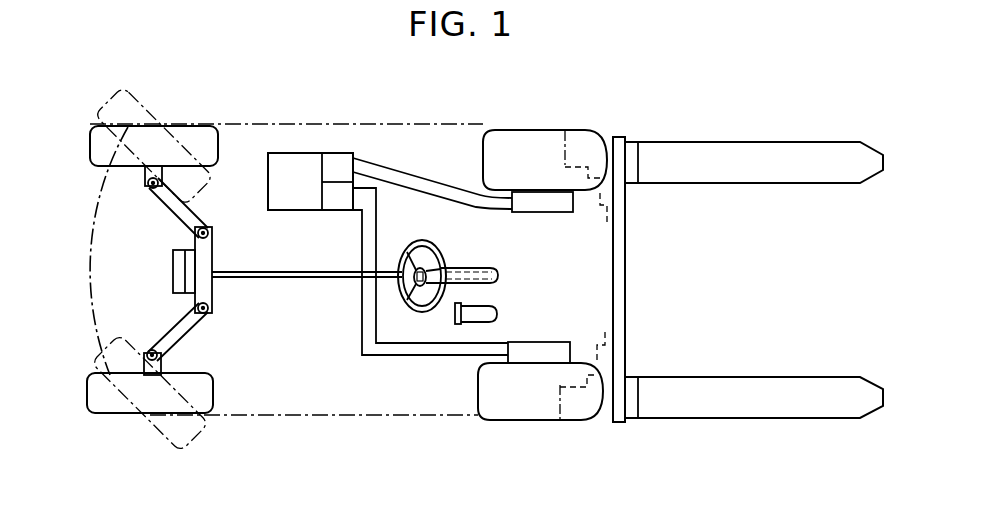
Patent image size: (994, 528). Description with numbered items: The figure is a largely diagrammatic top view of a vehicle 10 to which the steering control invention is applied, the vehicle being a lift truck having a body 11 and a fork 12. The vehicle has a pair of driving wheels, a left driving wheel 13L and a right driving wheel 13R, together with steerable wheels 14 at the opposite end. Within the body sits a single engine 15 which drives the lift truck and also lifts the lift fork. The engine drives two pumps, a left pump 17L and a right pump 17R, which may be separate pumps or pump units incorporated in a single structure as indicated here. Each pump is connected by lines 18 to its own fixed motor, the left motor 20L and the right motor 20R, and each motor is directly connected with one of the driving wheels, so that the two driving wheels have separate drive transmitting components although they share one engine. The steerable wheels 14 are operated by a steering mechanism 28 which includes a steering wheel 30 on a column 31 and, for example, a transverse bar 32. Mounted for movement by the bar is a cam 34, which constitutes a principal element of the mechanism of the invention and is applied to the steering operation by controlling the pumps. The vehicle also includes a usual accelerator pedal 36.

The vehicle 10 is at (262, 112).
The body 11 is at (365, 405).
The fork 12 is at (758, 152).
The left driving wheel 13L is at (587, 143).
The right driving wheel 13R is at (582, 410).
The steerable wheels 14 is at (97, 132).
The engine 15 is at (268, 179).
The left pump 17L is at (340, 160).
The right pump 17R is at (337, 207).
The lines 18 is at (430, 182).
The left motor 20L is at (538, 206).
The right motor 20R is at (545, 350).
The steering mechanism 28 is at (321, 281).
The steering wheel 30 is at (429, 242).
The column 31 is at (466, 268).
The transverse bar 32 is at (205, 288).
The cam 34 is at (173, 270).
The accelerator pedal 36 is at (492, 306).